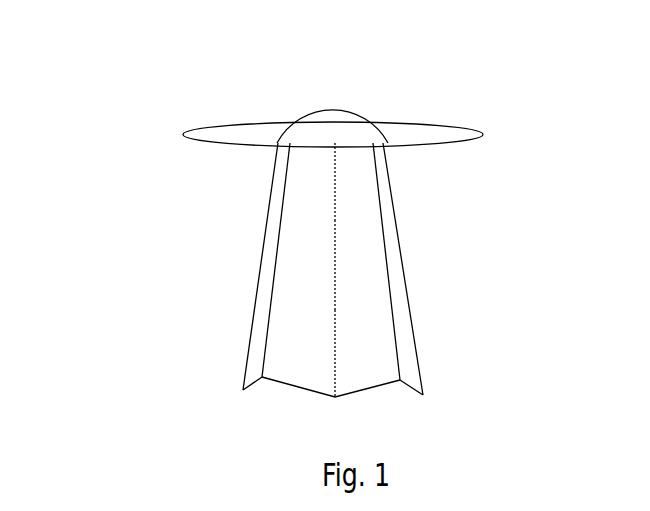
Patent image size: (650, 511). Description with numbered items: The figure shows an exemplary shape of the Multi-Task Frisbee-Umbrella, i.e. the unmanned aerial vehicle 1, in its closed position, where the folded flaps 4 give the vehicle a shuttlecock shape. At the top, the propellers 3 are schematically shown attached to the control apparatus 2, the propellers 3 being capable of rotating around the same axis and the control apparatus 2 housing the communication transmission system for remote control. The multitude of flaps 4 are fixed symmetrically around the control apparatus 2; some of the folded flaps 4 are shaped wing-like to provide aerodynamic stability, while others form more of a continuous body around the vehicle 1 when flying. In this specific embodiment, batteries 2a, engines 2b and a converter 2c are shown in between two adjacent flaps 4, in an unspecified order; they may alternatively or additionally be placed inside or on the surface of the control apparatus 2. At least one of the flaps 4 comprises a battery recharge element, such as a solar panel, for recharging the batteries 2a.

The unmanned aerial vehicle 1 is at (343, 266).
The control apparatus 2 is at (335, 123).
The propeller 3 is at (220, 135).
The batteries 2a is at (335, 183).
The engines 2b is at (335, 275).
The converter 2c is at (333, 372).
The flaps 4 is at (362, 363).